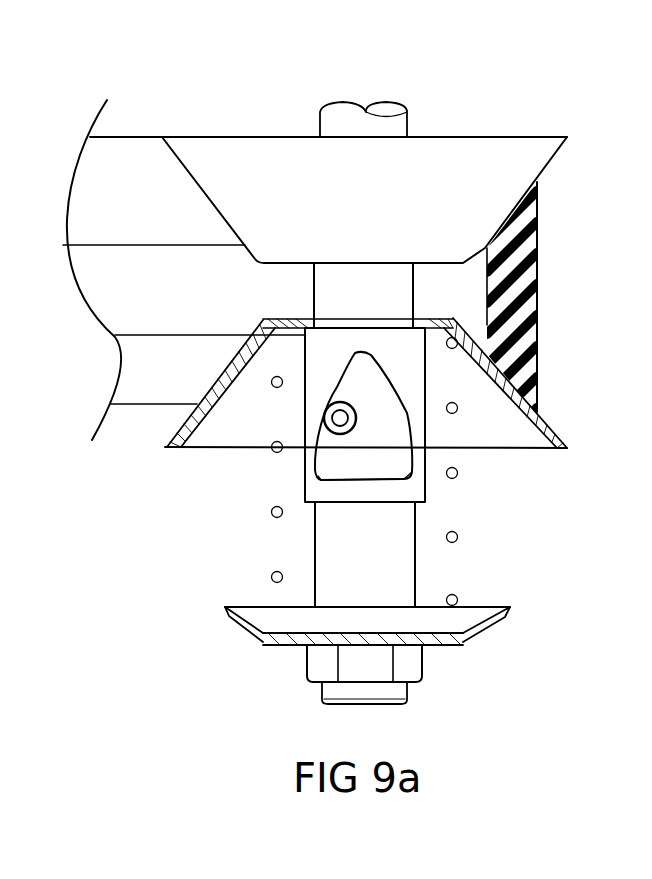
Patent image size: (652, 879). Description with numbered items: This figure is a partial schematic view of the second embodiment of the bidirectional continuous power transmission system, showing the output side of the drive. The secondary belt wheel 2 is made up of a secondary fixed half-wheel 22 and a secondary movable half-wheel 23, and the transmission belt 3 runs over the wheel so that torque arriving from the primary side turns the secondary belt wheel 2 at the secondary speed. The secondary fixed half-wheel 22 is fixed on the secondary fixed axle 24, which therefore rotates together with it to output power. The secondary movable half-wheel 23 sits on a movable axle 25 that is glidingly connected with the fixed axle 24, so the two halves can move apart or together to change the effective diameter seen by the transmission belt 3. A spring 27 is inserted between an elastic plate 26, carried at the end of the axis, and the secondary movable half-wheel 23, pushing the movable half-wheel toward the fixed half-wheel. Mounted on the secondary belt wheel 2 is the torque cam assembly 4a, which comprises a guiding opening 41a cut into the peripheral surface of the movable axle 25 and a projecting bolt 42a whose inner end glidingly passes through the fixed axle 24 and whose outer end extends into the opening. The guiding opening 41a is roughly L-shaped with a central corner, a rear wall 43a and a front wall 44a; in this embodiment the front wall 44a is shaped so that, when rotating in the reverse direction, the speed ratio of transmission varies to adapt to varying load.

The secondary belt wheel 2 is at (407, 87).
The secondary fixed half-wheel 22 is at (192, 148).
The secondary fixed axle 24 is at (400, 273).
The transmission belt 3 is at (557, 288).
The secondary movable half-wheel 23 is at (167, 445).
The movable axle 25 is at (425, 457).
The elastic plate 26 is at (510, 607).
The spring 27 is at (271, 580).
The rear wall 43a is at (407, 413).
The front wall 44a is at (334, 392).
The projecting bolt 42a is at (321, 433).
The guiding opening 41a is at (332, 465).
The torque cam assembly 4a is at (413, 483).